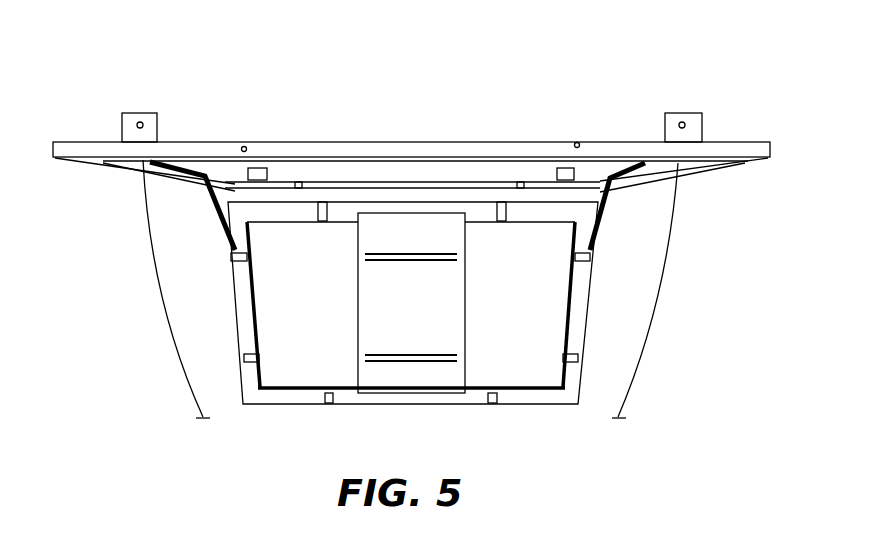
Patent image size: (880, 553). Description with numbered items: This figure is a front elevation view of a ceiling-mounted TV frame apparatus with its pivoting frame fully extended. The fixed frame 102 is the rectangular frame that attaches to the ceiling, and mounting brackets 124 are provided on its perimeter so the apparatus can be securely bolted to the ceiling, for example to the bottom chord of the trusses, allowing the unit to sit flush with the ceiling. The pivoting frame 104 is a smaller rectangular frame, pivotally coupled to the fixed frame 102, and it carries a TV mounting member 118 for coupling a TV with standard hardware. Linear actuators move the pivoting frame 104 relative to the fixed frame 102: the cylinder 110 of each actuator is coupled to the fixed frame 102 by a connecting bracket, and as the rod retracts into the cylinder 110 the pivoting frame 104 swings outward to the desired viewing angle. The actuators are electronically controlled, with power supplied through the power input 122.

The fixed frame 102 is at (422, 143).
The pivoting frame 104 is at (547, 400).
The cylinder 110 is at (195, 167).
The TV mounting member 118 is at (452, 308).
The power input 122 is at (157, 277).
The mounting brackets 124 is at (130, 128).